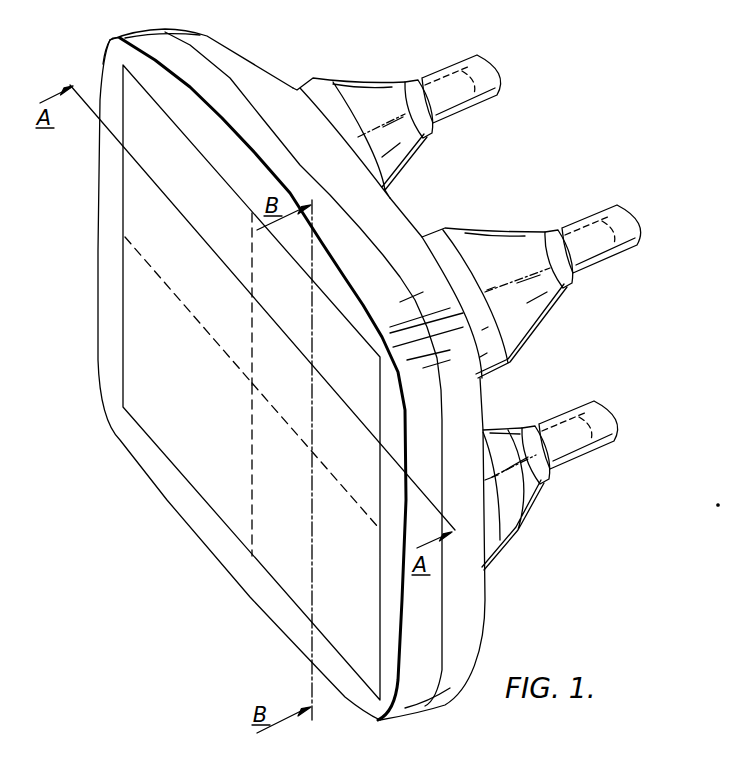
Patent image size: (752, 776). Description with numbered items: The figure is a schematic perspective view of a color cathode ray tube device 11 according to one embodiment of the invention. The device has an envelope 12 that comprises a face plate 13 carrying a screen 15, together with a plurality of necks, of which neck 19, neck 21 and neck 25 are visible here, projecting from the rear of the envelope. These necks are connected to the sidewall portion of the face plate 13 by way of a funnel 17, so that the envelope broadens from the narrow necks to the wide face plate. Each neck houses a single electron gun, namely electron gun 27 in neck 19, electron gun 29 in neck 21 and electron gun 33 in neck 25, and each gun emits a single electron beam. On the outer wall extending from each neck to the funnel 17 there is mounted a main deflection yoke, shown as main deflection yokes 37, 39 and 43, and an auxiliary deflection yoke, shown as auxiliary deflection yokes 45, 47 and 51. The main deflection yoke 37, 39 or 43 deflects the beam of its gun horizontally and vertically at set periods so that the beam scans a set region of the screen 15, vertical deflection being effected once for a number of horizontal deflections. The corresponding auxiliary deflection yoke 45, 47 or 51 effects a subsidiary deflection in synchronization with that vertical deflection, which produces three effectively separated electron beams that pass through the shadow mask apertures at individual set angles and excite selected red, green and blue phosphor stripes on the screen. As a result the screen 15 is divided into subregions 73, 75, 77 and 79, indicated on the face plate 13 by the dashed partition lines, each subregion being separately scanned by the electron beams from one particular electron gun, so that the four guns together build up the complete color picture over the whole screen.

The color cathode ray tube device 11 is at (281, 37).
The envelope 12 is at (156, 22).
The face plate 13 is at (125, 50).
The screen 15 is at (148, 203).
The funnel 17 is at (227, 62).
The neck 19 is at (468, 58).
The neck 21 is at (608, 207).
The neck 25 is at (600, 403).
The electron gun 27 is at (462, 100).
The electron gun 29 is at (606, 252).
The electron gun 33 is at (596, 456).
The main deflection yoke 37 is at (368, 98).
The main deflection yoke 39 is at (493, 243).
The main deflection yoke 43 is at (505, 443).
The auxiliary deflection yoke 45 is at (413, 92).
The auxiliary deflection yoke 47 is at (550, 234).
The auxiliary deflection yoke 51 is at (545, 476).
The subregion 73 is at (180, 201).
The subregion 75 is at (330, 369).
The subregion 77 is at (168, 399).
The subregion 79 is at (320, 570).